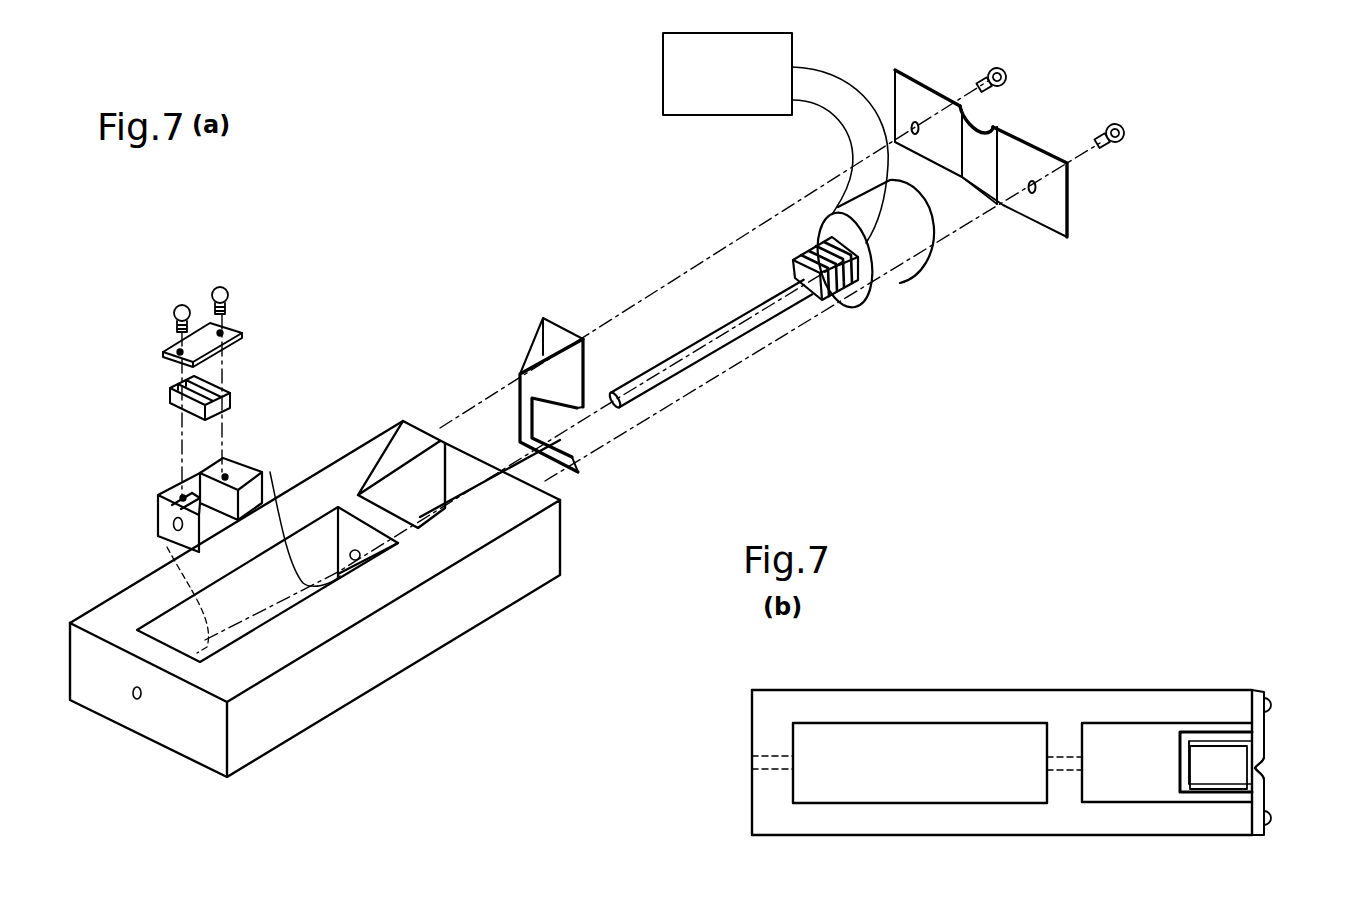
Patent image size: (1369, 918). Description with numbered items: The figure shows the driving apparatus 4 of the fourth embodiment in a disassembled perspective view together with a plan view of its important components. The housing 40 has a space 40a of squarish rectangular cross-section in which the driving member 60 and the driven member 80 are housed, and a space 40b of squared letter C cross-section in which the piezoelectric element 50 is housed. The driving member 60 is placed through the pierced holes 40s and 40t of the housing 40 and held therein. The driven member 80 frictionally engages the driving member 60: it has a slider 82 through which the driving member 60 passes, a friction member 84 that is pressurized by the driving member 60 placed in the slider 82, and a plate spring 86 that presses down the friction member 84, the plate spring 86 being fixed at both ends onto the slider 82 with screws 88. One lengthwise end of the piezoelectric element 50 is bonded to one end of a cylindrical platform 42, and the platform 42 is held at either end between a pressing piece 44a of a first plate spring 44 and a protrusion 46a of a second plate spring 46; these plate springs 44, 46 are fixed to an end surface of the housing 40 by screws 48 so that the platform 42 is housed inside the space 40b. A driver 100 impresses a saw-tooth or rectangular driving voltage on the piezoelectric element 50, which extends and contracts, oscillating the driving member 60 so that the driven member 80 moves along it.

In FIG. 7A, the driving apparatus 4 is at (589, 242).
In FIG. 7A, the housing 40 is at (412, 636).
In FIG. 7B, the housing 40 is at (1045, 700).
In FIG. 7A, the space 40a is at (173, 637).
In FIG. 7B, the space 40a is at (910, 750).
In FIG. 7A, the space 40b is at (393, 487).
In FIG. 7B, the space 40b is at (1142, 740).
In FIG. 7A, the pierced hole 40s is at (133, 697).
In FIG. 7B, the pierced hole 40s is at (765, 772).
In FIG. 7A, the pierced hole 40t is at (363, 550).
In FIG. 7B, the pierced hole 40t is at (1057, 770).
In FIG. 7A, the cylindrical platform 42 is at (907, 273).
In FIG. 7B, the cylindrical platform 42 is at (1203, 778).
In FIG. 7A, the first plate spring 44 is at (540, 362).
In FIG. 7B, the first plate spring 44 is at (1228, 728).
In FIG. 7A, the pressing piece 44a is at (580, 474).
In FIG. 7B, the pressing piece 44a is at (1180, 767).
In FIG. 7A, the second plate spring 46 is at (1025, 138).
In FIG. 7B, the second plate spring 46 is at (1264, 730).
In FIG. 7A, the protrusion 46a is at (980, 183).
In FIG. 7B, the protrusion 46a is at (1258, 765).
In FIG. 7A, the screw 48 is at (1008, 72).
In FIG. 7B, the screw 48 is at (1271, 703).
In FIG. 7A, the piezoelectric element 50 is at (832, 298).
In FIG. 7A, the driving member 60 is at (687, 358).
In FIG. 7A, the driven member 80 is at (330, 238).
In FIG. 7A, the slider 82 is at (247, 465).
In FIG. 7A, the friction member 84 is at (218, 390).
In FIG. 7A, the plate spring 86 is at (228, 335).
In FIG. 7A, the screw 88 is at (225, 293).
In FIG. 7A, the driver 100 is at (663, 52).